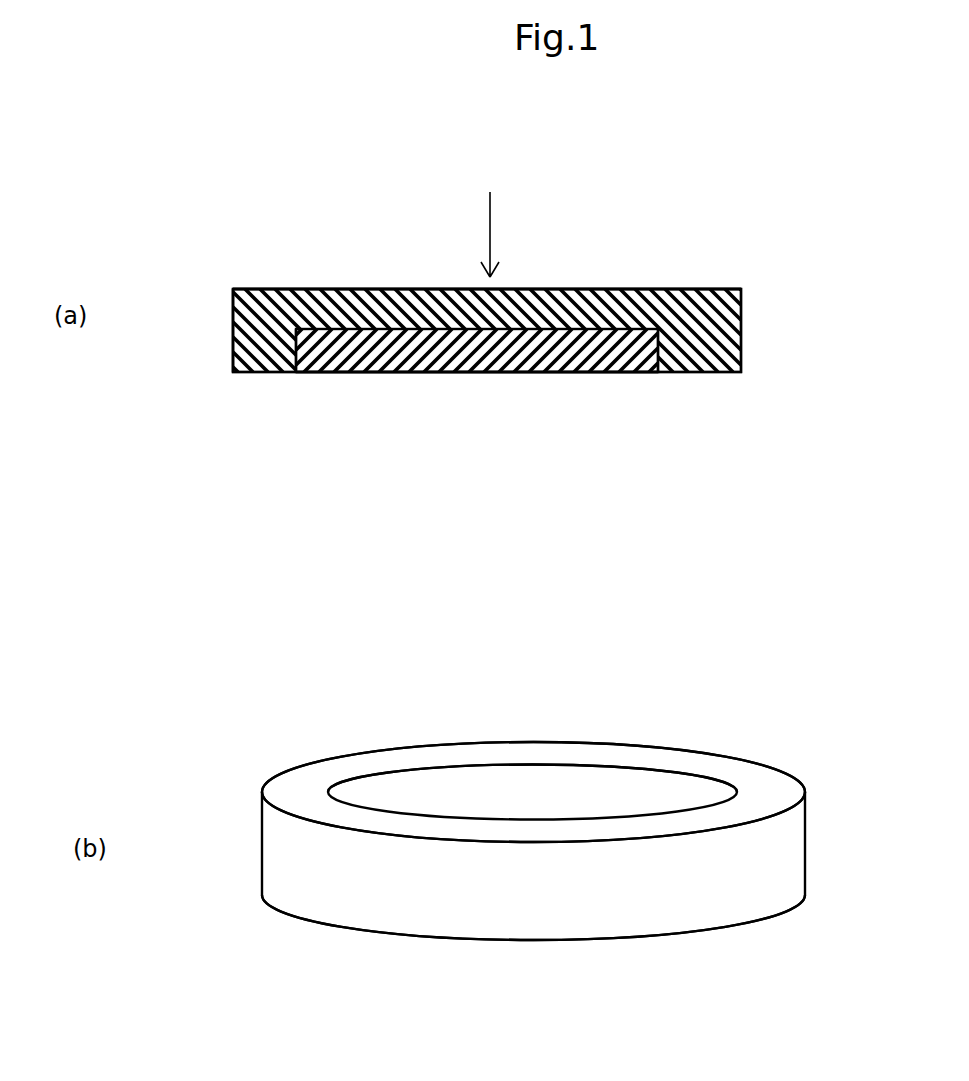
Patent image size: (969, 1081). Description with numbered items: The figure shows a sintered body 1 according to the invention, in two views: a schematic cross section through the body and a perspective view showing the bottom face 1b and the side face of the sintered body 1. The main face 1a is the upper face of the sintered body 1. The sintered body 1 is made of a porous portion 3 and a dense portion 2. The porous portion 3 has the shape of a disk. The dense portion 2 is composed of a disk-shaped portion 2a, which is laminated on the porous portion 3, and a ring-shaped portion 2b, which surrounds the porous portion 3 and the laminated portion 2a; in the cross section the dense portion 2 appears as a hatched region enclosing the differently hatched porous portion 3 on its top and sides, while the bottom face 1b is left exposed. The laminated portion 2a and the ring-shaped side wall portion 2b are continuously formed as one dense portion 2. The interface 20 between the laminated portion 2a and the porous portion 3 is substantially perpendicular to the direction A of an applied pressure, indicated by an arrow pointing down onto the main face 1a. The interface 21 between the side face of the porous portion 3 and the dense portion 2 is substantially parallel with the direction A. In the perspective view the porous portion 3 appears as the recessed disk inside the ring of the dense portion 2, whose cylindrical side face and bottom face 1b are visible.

The sintered body 1 is at (770, 325).
The main face 1a is at (592, 289).
The bottom face 1b is at (497, 372).
The dense portion 2 is at (700, 320).
The disk-shaped portion 2a is at (415, 313).
The ring-shaped portion 2b is at (262, 313).
The porous portion 3 is at (612, 358).
The interface 20 is at (383, 347).
The interface 21 is at (287, 357).
The direction of applied pressure A is at (490, 228).